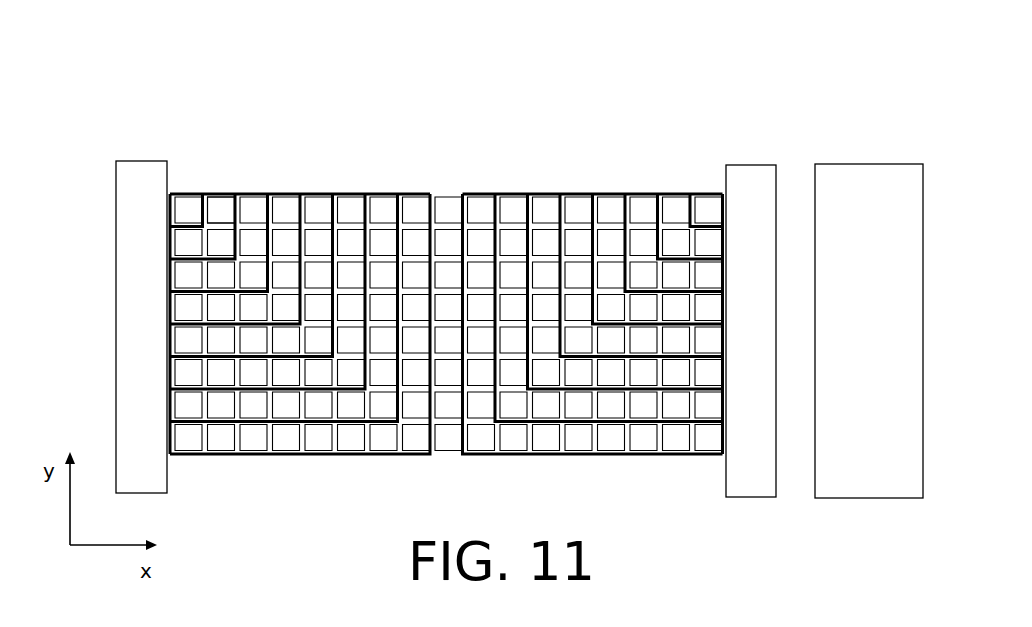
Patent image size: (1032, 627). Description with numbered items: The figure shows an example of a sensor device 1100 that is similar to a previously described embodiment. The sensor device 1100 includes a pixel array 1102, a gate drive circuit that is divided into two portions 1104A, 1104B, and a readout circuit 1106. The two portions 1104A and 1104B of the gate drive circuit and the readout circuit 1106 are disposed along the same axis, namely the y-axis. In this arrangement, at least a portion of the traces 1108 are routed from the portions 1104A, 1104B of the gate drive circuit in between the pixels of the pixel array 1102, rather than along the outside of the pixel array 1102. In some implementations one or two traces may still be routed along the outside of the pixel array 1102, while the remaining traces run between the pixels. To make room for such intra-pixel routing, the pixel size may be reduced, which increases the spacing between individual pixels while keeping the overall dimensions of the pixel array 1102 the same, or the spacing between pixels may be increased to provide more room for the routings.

The sensor device 1100 is at (178, 125).
The pixel array 1102 is at (478, 176).
The first portion of the gate drive circuit 1104A is at (115, 268).
The second portion of the gate drive circuit 1104B is at (760, 165).
The readout circuit 1106 is at (845, 355).
The traces 1108 is at (207, 211).